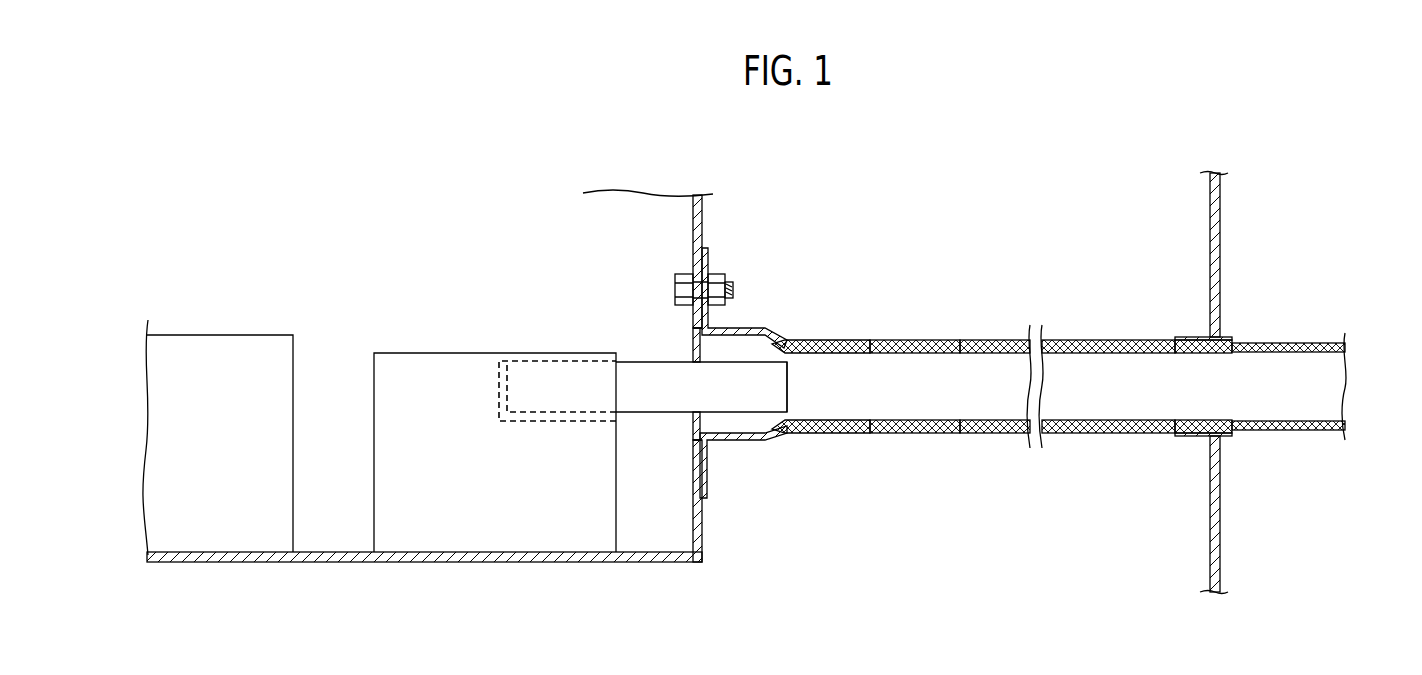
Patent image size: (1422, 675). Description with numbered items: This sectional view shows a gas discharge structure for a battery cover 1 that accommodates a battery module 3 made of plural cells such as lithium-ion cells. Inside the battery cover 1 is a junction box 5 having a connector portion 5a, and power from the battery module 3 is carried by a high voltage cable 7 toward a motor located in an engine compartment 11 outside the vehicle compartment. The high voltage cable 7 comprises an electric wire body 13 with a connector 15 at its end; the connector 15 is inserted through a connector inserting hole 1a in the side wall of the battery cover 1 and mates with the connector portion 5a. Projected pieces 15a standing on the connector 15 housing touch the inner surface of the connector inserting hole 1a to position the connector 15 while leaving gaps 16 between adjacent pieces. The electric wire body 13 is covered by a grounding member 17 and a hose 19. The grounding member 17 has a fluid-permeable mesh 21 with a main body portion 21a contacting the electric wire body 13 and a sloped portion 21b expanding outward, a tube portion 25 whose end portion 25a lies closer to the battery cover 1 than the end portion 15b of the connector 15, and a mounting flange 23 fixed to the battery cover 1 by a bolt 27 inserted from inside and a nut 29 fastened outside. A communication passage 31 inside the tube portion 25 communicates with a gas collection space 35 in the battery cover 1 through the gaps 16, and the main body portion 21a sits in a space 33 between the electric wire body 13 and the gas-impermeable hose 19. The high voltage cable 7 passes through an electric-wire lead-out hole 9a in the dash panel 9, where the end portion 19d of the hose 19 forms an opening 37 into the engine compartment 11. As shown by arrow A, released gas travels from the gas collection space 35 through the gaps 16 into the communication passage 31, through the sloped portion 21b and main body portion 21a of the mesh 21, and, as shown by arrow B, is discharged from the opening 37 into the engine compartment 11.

The battery cover 1 is at (350, 562).
The connector inserting hole 1a is at (701, 431).
The battery module 3 is at (220, 335).
The junction box 5 is at (416, 353).
The connector portion 5a is at (499, 361).
The high voltage cable 7 is at (915, 335).
The dash panel 9 is at (1222, 205).
The electric-wire lead-out hole 9a is at (1205, 356).
The engine compartment 11 is at (1331, 272).
The electric wire body 13 is at (950, 413).
The connector 15 is at (640, 368).
The projected pieces 15a is at (690, 345).
The end portion of the connector 15b is at (790, 385).
The gaps 16 is at (687, 364).
The grounding member 17 is at (988, 433).
The hose 19 is at (898, 433).
The end portion of the hose 19d is at (1232, 436).
The mesh 21 is at (880, 433).
The main body portion 21a is at (885, 342).
The sloped portion 21b is at (792, 343).
The mounting flange 23 is at (710, 250).
The tube portion 25 is at (752, 442).
The end portion of the tube portion 25a is at (775, 333).
The bolt 27 is at (675, 290).
The nut 29 is at (720, 285).
The communication passage 31 is at (737, 423).
The space 33 is at (1000, 341).
The gas collection space 35 is at (352, 257).
The opening 37 is at (1240, 342).
The arrow A is at (768, 349).
The arrow B is at (1273, 343).